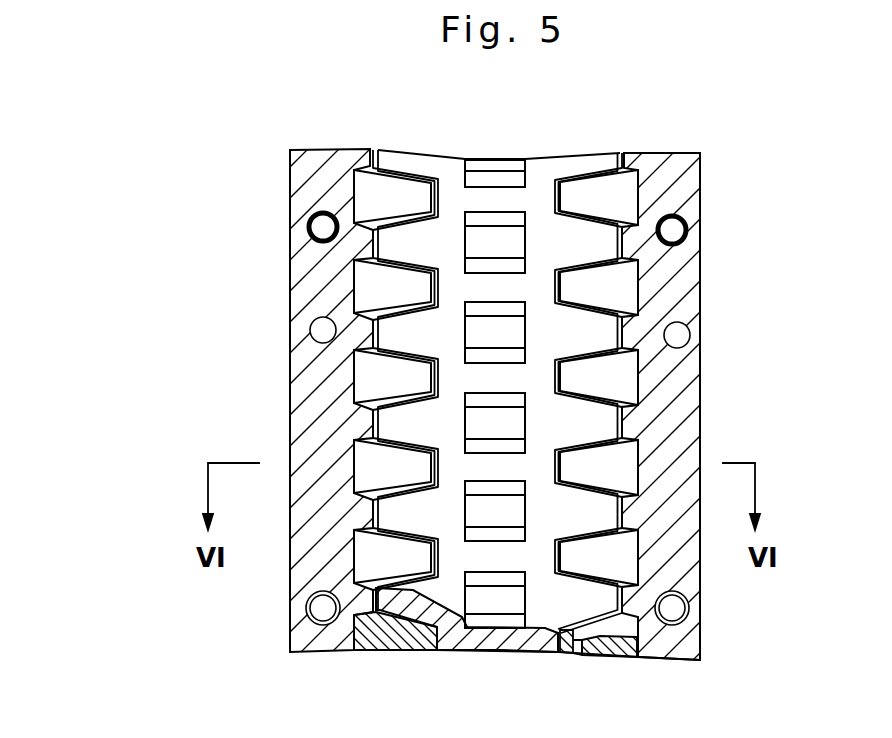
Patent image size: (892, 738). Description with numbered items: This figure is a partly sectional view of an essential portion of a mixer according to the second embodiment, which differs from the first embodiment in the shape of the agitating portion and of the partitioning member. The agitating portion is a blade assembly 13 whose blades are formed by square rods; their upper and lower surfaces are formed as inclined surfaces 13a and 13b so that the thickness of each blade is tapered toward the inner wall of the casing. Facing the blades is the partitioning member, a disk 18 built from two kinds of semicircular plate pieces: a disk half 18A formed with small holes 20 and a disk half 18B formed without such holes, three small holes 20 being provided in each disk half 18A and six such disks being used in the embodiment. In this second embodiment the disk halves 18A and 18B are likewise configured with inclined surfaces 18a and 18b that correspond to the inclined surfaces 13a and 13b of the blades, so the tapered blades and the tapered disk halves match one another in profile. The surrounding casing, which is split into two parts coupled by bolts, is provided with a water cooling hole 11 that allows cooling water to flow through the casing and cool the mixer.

The water cooling hole 11 is at (655, 338).
The blade assembly 13 is at (504, 393).
The inclined surface 13a is at (590, 214).
The inclined surface 13b is at (592, 270).
The disk 18 is at (198, 187).
The disk half 18A is at (433, 397).
The disk half 18B is at (365, 276).
The inclined surface 18a is at (398, 175).
The inclined surface 18b is at (425, 230).
The small hole 20 is at (580, 655).